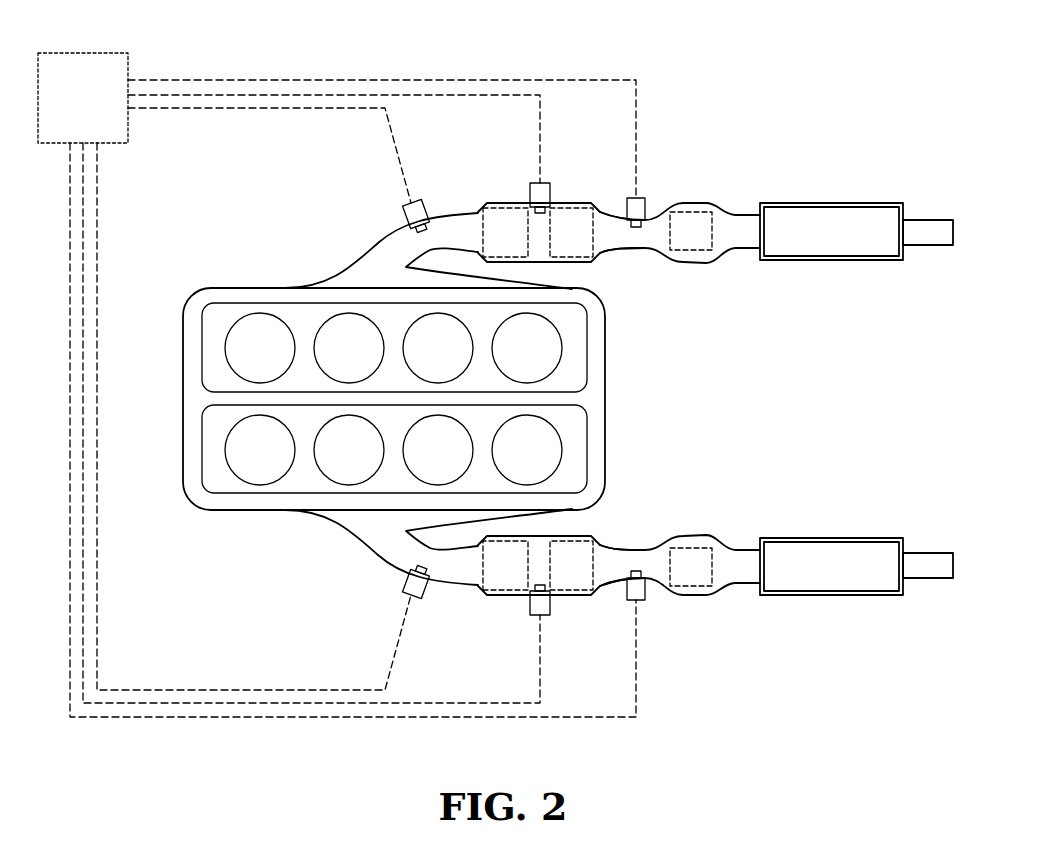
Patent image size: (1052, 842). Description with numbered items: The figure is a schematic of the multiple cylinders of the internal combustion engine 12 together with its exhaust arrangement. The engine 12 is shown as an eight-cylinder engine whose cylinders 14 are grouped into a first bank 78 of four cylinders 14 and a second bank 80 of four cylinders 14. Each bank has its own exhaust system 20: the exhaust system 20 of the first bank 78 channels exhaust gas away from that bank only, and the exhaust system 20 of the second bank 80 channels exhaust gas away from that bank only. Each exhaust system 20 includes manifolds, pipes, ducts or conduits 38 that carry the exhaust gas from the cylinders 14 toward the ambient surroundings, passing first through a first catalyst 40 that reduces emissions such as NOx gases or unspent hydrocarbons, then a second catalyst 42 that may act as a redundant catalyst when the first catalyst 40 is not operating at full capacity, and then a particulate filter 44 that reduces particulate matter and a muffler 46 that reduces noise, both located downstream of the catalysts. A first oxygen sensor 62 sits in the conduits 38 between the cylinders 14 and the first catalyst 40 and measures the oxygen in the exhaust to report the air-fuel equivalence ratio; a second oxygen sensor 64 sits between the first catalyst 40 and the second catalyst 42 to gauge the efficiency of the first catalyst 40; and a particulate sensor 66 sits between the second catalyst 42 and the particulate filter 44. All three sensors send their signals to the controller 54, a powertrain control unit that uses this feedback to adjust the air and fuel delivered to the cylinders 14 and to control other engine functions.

The internal combustion engine 12 is at (183, 312).
The cylinder 14 is at (350, 347).
The exhaust system 20 is at (795, 113).
The conduits 38 is at (652, 258).
The first catalyst 40 is at (478, 236).
The second catalyst 42 is at (595, 234).
The particulate filter 44 is at (712, 230).
The muffler 46 is at (825, 203).
The controller 54 is at (110, 53).
The first oxygen sensor 62 is at (406, 221).
The second oxygen sensor 64 is at (530, 192).
The particulate sensor 66 is at (627, 207).
The first bank 78 is at (648, 306).
The second bank 80 is at (648, 404).